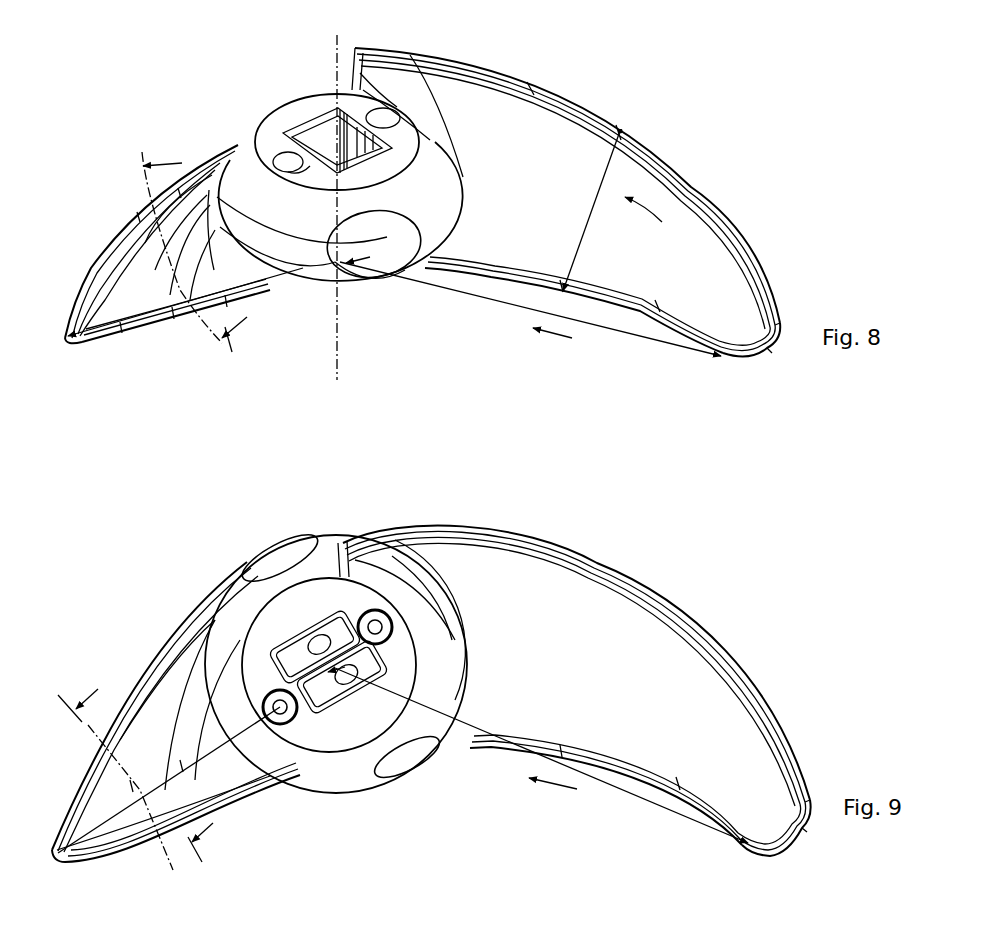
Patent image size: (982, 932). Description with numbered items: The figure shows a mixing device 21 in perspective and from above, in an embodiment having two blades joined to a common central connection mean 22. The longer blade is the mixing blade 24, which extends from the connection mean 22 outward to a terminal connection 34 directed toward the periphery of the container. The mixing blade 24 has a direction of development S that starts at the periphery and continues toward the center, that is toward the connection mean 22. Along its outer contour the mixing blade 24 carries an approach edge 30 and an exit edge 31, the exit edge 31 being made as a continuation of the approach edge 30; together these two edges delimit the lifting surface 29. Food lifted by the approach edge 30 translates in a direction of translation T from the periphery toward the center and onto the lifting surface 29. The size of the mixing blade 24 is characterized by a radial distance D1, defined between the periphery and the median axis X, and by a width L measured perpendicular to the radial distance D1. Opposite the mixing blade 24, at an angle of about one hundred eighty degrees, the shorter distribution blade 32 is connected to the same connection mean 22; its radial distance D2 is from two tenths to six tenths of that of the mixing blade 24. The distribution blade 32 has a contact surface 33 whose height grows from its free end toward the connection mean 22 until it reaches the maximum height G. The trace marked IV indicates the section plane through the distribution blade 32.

In FIG. 8, the mixing device 21 is at (589, 53).
In FIG. 9, the mixing device 21 is at (625, 513).
In FIG. 8, the connection mean 22 is at (287, 96).
In FIG. 9, the connection mean 22 is at (297, 534).
In FIG. 8, the mixing blade 24 is at (735, 196).
In FIG. 9, the mixing blade 24 is at (566, 532).
In FIG. 8, the lifting surface 29 is at (584, 146).
In FIG. 8, the approach edge 30 is at (606, 311).
In FIG. 9, the approach edge 30 is at (644, 779).
In FIG. 8, the exit edge 31 is at (532, 87).
In FIG. 9, the exit edge 31 is at (639, 576).
In FIG. 8, the distribution blade 32 is at (172, 338).
In FIG. 9, the distribution blade 32 is at (161, 848).
In FIG. 8, the contact surface 33 is at (195, 154).
In FIG. 9, the contact surface 33 is at (155, 640).
In FIG. 8, the terminal connection 34 is at (770, 359).
In FIG. 9, the terminal connection 34 is at (786, 852).
In FIG. 8, the maximum height G is at (140, 240).
In FIG. 8, the width L is at (616, 147).
In FIG. 8, the direction of development S is at (653, 206).
In FIG. 8, the direction of translation T is at (558, 333).
In FIG. 9, the direction of translation T is at (560, 786).
In FIG. 8, the median axis X is at (340, 352).
In FIG. 8, the radial distance D1 is at (493, 293).
In FIG. 9, the radial distance D1 is at (476, 728).
In FIG. 8, the radial distance D2 is at (303, 270).
In FIG. 9, the radial distance D2 is at (104, 824).
In FIG. 8, the section line IV- IV is at (202, 244).
In FIG. 9, the section line IV- IV is at (135, 769).